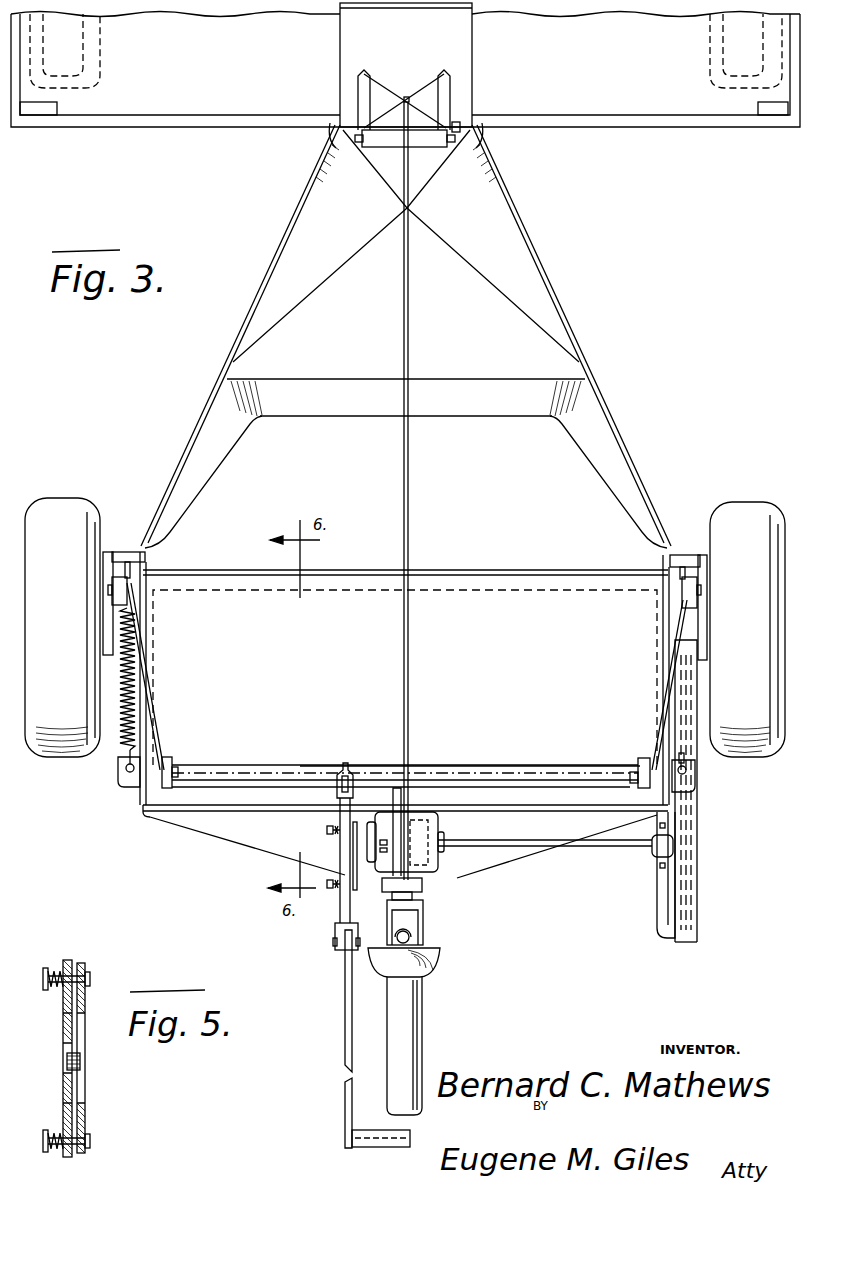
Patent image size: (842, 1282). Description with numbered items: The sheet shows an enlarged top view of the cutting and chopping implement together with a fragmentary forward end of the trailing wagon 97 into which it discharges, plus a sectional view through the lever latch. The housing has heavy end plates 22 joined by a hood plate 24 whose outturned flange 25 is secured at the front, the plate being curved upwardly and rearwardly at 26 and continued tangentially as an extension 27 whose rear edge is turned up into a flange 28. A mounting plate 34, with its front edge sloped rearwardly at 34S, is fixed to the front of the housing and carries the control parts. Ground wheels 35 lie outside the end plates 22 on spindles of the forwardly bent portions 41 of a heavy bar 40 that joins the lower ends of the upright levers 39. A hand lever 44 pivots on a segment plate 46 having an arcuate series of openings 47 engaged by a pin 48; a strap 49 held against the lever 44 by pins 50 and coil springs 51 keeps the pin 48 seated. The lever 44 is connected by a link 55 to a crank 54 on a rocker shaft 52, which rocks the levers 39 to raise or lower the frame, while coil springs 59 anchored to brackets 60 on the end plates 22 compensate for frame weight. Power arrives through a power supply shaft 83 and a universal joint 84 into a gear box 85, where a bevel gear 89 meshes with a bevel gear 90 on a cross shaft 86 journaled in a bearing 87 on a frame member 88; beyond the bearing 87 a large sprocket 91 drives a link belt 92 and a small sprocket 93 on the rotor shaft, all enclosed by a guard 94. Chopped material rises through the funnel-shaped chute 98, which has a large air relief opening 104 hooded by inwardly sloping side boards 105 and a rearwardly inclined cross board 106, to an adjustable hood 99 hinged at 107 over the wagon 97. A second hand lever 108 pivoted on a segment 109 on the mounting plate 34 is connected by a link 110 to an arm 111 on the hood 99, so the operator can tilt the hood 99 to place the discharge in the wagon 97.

In FIG. 3, the end plate 22 is at (143, 754).
In FIG. 3, the hood plate 24 is at (366, 696).
In FIG. 3, the outturned flange 25 is at (250, 795).
In FIG. 3, the curved portion of hood plate 26 is at (571, 751).
In FIG. 3, the hood plate extension 27 is at (576, 641).
In FIG. 3, the flange 28 is at (581, 570).
In FIG. 3, the mounting plate 34 is at (280, 845).
In FIG. 3, the sloped front edge 34S is at (238, 846).
In FIG. 3, the ground wheel 35 is at (56, 500).
In FIG. 3, the upright lever 39 is at (122, 560).
In FIG. 3, the bar 40 is at (140, 552).
In FIG. 3, the forwardly extending portion 41 is at (110, 598).
In FIG. 3, the hand lever 44 is at (345, 1024).
In FIG. 5, the hand lever 44 is at (85, 1075).
In FIG. 5, the segment plate 46 is at (63, 1005).
In FIG. 5, the opening 47 is at (63, 1040).
In FIG. 5, the pin 48 is at (82, 1058).
In FIG. 5, the strap 49 is at (85, 1003).
In FIG. 5, the pin 50 is at (91, 974).
In FIG. 3, the coil spring 51 is at (330, 827).
In FIG. 5, the coil spring 51 is at (57, 968).
In FIG. 3, the rocker shaft 52 is at (471, 765).
In FIG. 3, the crank 54 is at (347, 763).
In FIG. 3, the link 55 is at (352, 802).
In FIG. 3, the coil spring 59 is at (124, 745).
In FIG. 3, the bracket 60 is at (118, 788).
In FIG. 3, the power supply shaft 83 is at (423, 1023).
In FIG. 3, the universal joint 84 is at (423, 930).
In FIG. 3, the gear box 85 is at (442, 824).
In FIG. 3, the cross shaft 86 is at (548, 841).
In FIG. 3, the bearing 87 is at (660, 853).
In FIG. 3, the frame member 88 is at (660, 906).
In FIG. 3, the bevel gear 89 is at (420, 889).
In FIG. 3, the bevel gear 90 is at (419, 815).
In FIG. 3, the large sprocket 91 is at (689, 882).
In FIG. 3, the link belt 92 is at (692, 757).
In FIG. 3, the small sprocket 93 is at (695, 677).
In FIG. 3, the guard 94 is at (697, 932).
In FIG. 3, the trailing wagon 97 is at (567, 96).
In FIG. 3, the chute 98 is at (560, 297).
In FIG. 3, the adjustable hood 99 is at (417, 60).
In FIG. 3, the opening 104 is at (537, 441).
In FIG. 3, the side board 105 is at (212, 490).
In FIG. 3, the cross board 106 is at (464, 387).
In FIG. 3, the hinge 107 is at (456, 126).
In FIG. 3, the hand lever 108 is at (390, 885).
In FIG. 3, the segment 109 is at (398, 762).
In FIG. 3, the link 110 is at (403, 487).
In FIG. 3, the arm 111 is at (393, 130).